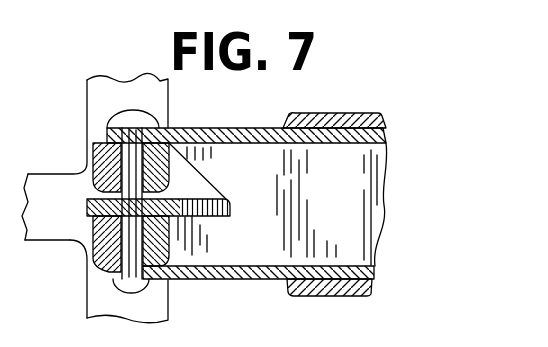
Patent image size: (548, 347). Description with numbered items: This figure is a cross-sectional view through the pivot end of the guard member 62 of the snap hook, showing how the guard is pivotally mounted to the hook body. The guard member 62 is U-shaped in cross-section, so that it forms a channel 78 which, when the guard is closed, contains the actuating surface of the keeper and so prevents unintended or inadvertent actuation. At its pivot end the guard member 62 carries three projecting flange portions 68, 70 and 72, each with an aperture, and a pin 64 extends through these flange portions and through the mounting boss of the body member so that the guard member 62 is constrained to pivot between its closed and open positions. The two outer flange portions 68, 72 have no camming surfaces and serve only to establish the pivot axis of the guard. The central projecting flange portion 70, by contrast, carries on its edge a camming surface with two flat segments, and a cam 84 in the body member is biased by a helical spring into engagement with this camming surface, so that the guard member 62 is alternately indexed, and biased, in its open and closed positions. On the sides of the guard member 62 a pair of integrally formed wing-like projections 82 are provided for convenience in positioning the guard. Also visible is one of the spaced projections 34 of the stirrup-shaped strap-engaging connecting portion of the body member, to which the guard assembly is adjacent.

The spaced projections 34 is at (88, 112).
The guard member 62 is at (264, 128).
The pin 64 is at (143, 122).
The projecting flange portion 68 is at (107, 128).
The central projecting flange portion 70 is at (182, 181).
The projecting flange portion 72 is at (86, 275).
The channel 78 is at (281, 241).
The wing-like projections 82 is at (346, 118).
The cam 84 is at (187, 274).